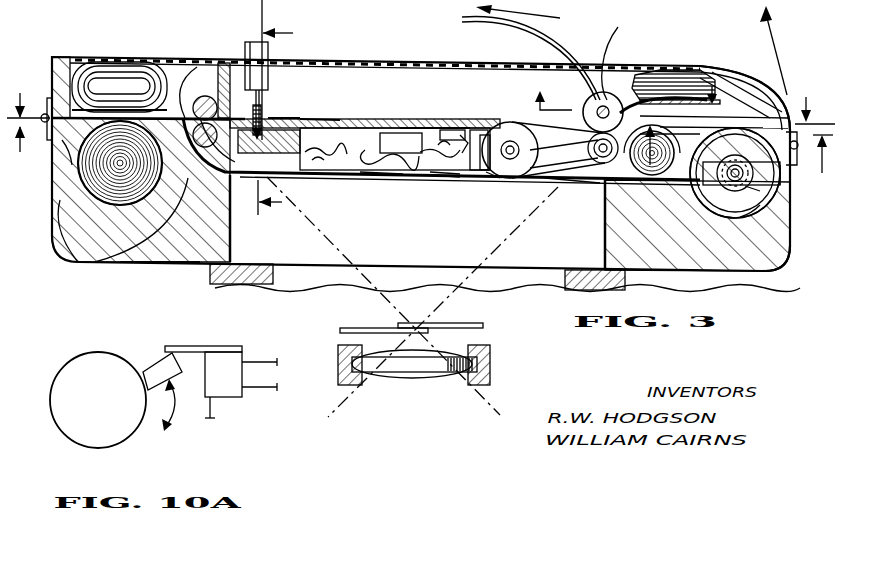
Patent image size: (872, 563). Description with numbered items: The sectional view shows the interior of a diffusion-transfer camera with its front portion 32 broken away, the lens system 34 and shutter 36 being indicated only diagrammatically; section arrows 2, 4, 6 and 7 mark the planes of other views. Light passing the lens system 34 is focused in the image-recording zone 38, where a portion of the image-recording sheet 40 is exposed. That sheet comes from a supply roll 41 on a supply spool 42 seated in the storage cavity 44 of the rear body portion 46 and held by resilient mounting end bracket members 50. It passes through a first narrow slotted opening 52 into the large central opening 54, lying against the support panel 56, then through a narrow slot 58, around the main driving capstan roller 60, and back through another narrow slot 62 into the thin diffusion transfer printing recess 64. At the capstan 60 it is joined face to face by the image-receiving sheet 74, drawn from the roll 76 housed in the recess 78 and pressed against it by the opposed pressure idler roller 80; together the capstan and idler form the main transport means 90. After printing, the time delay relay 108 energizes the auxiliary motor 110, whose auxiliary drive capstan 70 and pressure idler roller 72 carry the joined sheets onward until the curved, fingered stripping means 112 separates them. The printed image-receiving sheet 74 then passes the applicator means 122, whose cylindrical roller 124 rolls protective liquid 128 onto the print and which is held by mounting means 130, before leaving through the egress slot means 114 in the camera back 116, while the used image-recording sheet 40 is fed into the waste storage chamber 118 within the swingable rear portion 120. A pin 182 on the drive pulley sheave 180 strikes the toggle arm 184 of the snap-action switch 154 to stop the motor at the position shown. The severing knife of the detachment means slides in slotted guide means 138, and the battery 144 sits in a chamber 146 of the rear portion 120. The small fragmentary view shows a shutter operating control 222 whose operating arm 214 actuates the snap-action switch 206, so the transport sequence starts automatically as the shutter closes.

In FIG. 3, the section line 2- 2 is at (422, 96).
In FIG. 3, the section line 4- 4 is at (283, 112).
In FIG. 3, the section line 6- 6 is at (719, 102).
In FIG. 3, the section line 7- 7 is at (421, 158).
In FIG. 3, the front portion 32 is at (255, 294).
In FIG. 3, the lens system 34 is at (416, 400).
In FIG. 3, the shutter system 36 is at (486, 315).
In FIG. 3, the image-recording zone 38 is at (373, 178).
In FIG. 3, the image-recording sheet 40 is at (477, 183).
In FIG. 3, the supply roll 41 is at (747, 187).
In FIG. 3, the supply spool 42 is at (767, 207).
In FIG. 3, the storage cavity 44 is at (730, 210).
In FIG. 3, the rear body portion 46 is at (753, 257).
In FIG. 3, the resilient mounting end bracket members 50 is at (768, 172).
In FIG. 3, the first narrow slotted opening 52 is at (607, 188).
In FIG. 3, the large central opening 54 is at (430, 237).
In FIG. 3, the support panel 56 is at (360, 208).
In FIG. 3, the narrow slot 58 is at (300, 175).
In FIG. 3, the main driving capstan roller 60 is at (156, 263).
In FIG. 3, the narrow slot 62 is at (241, 183).
In FIG. 3, the diffusion transfer printing recess 64 is at (327, 116).
In FIG. 3, the auxiliary drive capstan 70 is at (588, 148).
In FIG. 3, the pressure idler roller 72 is at (592, 100).
In FIG. 3, the image-receiving sheet 74 is at (575, 40).
In FIG. 3, the roll of image-receiving sheet material 76 is at (76, 196).
In FIG. 3, the recess 78 is at (72, 143).
In FIG. 3, the pressure idler roller 80 is at (250, 80).
In FIG. 3, the main transport means 90 is at (182, 108).
In FIG. 3, the time delay relay 108 is at (413, 126).
In FIG. 3, the auxiliary motor 110 is at (455, 130).
In FIG. 3, the stripping means 112 is at (556, 184).
In FIG. 3, the egress slot means 114 is at (625, 55).
In FIG. 3, the back 116 is at (480, 64).
In FIG. 3, the waste storage chamber 118 is at (712, 197).
In FIG. 3, the swingable rear portion 120 is at (794, 87).
In FIG. 3, the applicator means 122 is at (680, 58).
In FIG. 3, the cylindrical roller 124 is at (625, 95).
In FIG. 3, the applicatory liquid 128 is at (692, 100).
In FIG. 3, the mounting means 130 is at (712, 152).
In FIG. 3, the slotted guide means 138 is at (270, 116).
In FIG. 3, the battery 144 is at (92, 66).
In FIG. 3, the chamber 146 is at (197, 67).
In FIG. 3, the snap-action two-position switch 154 is at (450, 193).
In FIG. 3, the drive pulley sheave 180 is at (510, 128).
In FIG. 3, the pin 182 is at (490, 128).
In FIG. 3, the toggle arm 184 is at (425, 200).
In FIG. 10A, the snap-action switch 206 is at (221, 389).
In FIG. 10A, the operating arm 214 is at (190, 346).
In FIG. 10A, the shutter operating control 222 is at (83, 348).